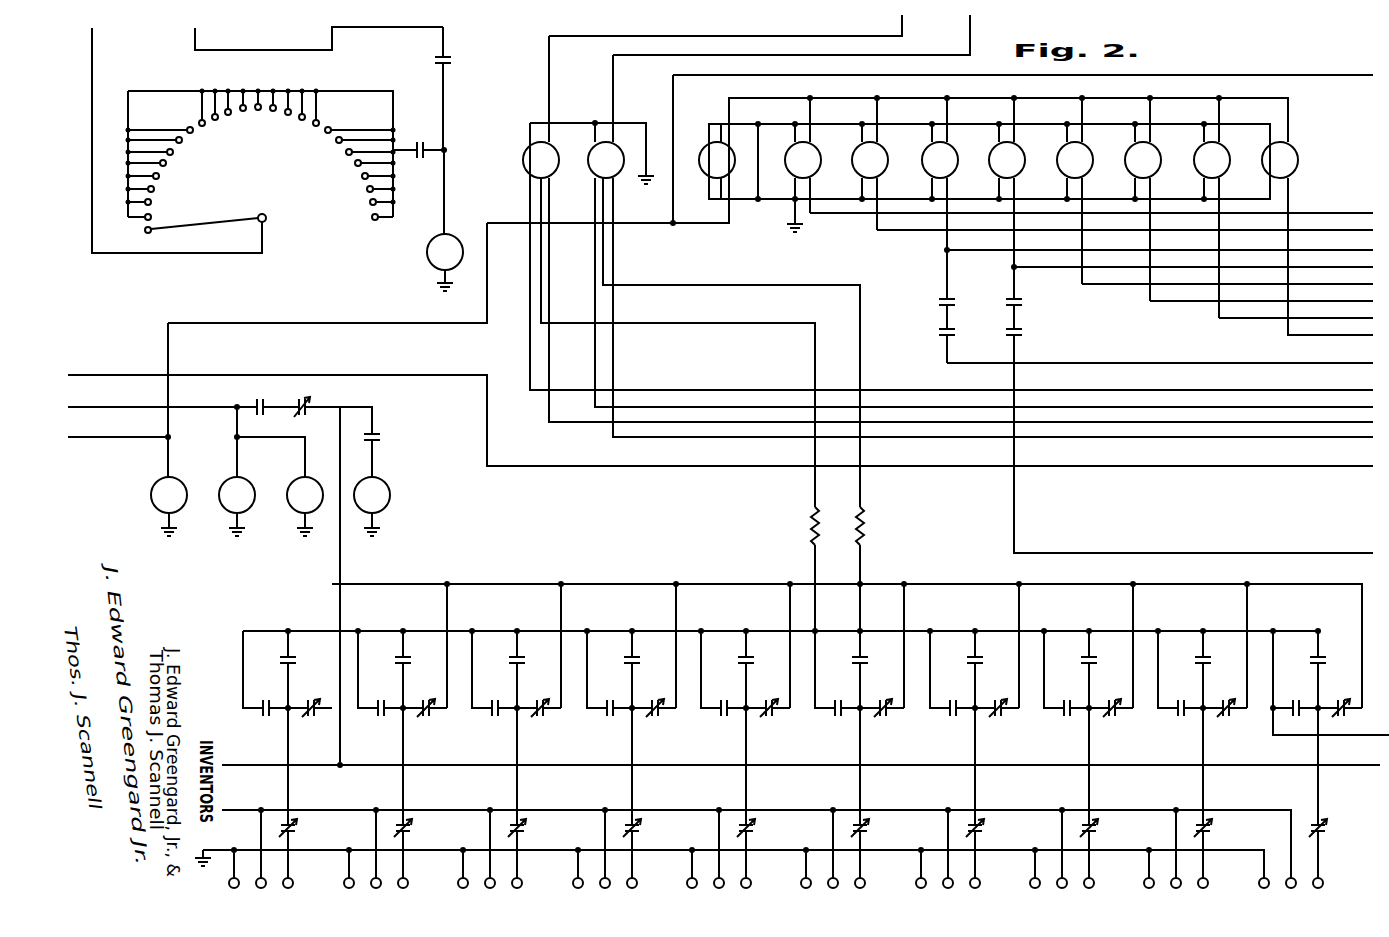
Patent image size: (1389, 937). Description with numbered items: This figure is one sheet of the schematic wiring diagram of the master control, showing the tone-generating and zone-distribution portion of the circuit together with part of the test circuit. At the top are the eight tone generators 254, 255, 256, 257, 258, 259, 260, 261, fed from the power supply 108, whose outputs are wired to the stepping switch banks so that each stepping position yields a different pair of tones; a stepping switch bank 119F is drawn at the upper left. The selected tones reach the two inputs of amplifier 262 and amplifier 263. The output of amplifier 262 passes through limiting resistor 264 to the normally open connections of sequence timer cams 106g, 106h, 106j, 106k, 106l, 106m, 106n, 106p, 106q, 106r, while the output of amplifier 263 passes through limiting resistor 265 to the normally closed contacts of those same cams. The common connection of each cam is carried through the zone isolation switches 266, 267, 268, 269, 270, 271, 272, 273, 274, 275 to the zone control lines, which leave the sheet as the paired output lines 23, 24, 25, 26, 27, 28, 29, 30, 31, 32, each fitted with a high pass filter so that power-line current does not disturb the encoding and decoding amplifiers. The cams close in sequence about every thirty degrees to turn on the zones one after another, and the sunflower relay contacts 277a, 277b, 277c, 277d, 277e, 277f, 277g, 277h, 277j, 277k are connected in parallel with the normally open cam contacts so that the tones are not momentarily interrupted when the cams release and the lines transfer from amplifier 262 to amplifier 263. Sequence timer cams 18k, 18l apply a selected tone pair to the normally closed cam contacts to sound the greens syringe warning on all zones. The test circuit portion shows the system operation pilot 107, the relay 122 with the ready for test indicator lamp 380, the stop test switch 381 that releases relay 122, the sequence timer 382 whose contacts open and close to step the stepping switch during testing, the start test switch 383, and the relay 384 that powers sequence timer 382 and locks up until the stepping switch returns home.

The stepping switch bank 119F is at (290, 190).
The start test switch 383 is at (440, 63).
The relay 384 is at (430, 255).
The amplifier 262 is at (526, 161).
The amplifier 263 is at (592, 147).
The power supply 108 is at (708, 149).
The tone generator 254 is at (791, 149).
The tone generator 255 is at (858, 149).
The tone generator 256 is at (928, 149).
The tone generator 257 is at (995, 149).
The tone generator 258 is at (1063, 149).
The tone generator 259 is at (1131, 149).
The tone generator 260 is at (1200, 149).
The tone generator 261 is at (1268, 149).
The sequence timer cam 18k is at (938, 301).
The sequence timer cam 18l is at (1024, 303).
The system operation pilot 107 is at (158, 484).
The relay 122 is at (226, 484).
The ready for test indicator lamp 380 is at (294, 483).
The stop test switch 381 is at (306, 398).
The sequence timer 382 is at (378, 482).
The limiting resistor 264 is at (809, 529).
The limiting resistor 265 is at (864, 529).
The sunflower relay contact 277a is at (278, 655).
The sunflower relay contact 277b is at (393, 655).
The sunflower relay contact 277c is at (507, 655).
The sunflower relay contact 277d is at (622, 655).
The sunflower relay contact 277e is at (736, 655).
The sunflower relay contact 277f is at (876, 614).
The sunflower relay contact 277g is at (965, 655).
The sunflower relay contact 277h is at (1079, 655).
The sunflower relay contact 277j is at (1193, 655).
The sunflower relay contact 277k is at (1308, 655).
The sequence timer cam 106g is at (265, 703).
The sequence timer cam 106h is at (376, 722).
The sequence timer cam 106j is at (490, 722).
The sequence timer cam 106k is at (605, 722).
The sequence timer cam 106l is at (719, 722).
The sequence timer cam 106m is at (833, 722).
The sequence timer cam 106n is at (948, 722).
The sequence timer cam 106p is at (1062, 722).
The sequence timer cam 106q is at (1176, 722).
The sequence timer cam 106r is at (1292, 718).
The zone isolation switch 266 is at (298, 831).
The zone isolation switch 267 is at (413, 831).
The zone isolation switch 268 is at (527, 831).
The zone isolation switch 269 is at (642, 831).
The zone isolation switch 270 is at (756, 831).
The zone isolation switch 271 is at (870, 831).
The zone isolation switch 272 is at (985, 831).
The zone isolation switch 273 is at (1099, 831).
The zone isolation switch 274 is at (1213, 831).
The zone isolation switch 275 is at (1328, 831).
The zone output lines 23 is at (276, 881).
The zone output lines 24 is at (391, 881).
The zone output lines 25 is at (505, 881).
The zone output lines 26 is at (620, 881).
The zone output lines 27 is at (734, 881).
The zone output lines 28 is at (848, 881).
The zone output lines 29 is at (963, 881).
The zone output lines 30 is at (1077, 881).
The zone output lines 31 is at (1191, 881).
The zone output lines 32 is at (1306, 881).